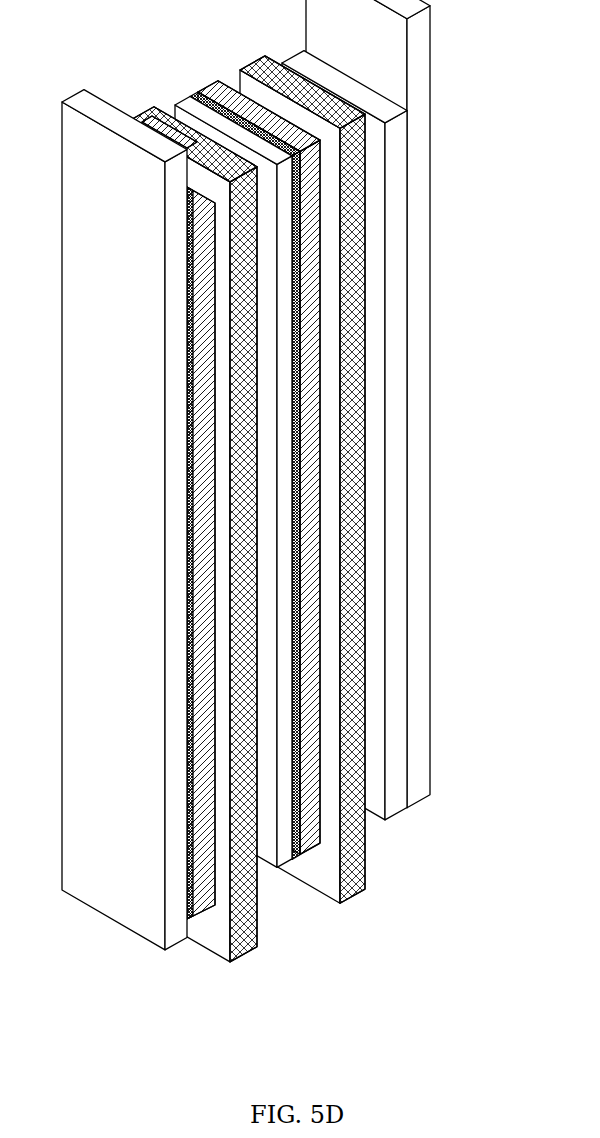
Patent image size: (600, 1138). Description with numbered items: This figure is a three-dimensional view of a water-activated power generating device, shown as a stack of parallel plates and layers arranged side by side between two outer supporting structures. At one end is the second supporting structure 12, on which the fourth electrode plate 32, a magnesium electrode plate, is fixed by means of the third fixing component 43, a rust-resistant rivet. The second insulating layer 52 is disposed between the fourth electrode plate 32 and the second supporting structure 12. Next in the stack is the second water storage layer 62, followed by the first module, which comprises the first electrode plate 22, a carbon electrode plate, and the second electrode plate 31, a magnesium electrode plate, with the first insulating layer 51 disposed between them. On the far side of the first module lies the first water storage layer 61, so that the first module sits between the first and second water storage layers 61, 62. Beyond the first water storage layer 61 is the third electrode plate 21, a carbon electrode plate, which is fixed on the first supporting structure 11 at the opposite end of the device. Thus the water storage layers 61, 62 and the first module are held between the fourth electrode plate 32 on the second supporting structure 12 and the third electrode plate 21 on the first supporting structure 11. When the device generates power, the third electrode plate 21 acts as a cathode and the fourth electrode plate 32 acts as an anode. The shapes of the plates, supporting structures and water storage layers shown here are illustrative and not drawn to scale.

The first supporting structure 11 is at (423, 783).
The third electrode plate 21 is at (398, 800).
The first water storage layer 61 is at (362, 880).
The second electrode plate 31 is at (310, 848).
The first insulating layer 51 is at (296, 858).
The first electrode plate 22 is at (283, 840).
The second water storage layer 62 is at (250, 940).
The fourth electrode plate 32 is at (207, 900).
The second insulating layer 52 is at (193, 917).
The second supporting structure 12 is at (178, 928).
The third fixing component 43 is at (94, 248).